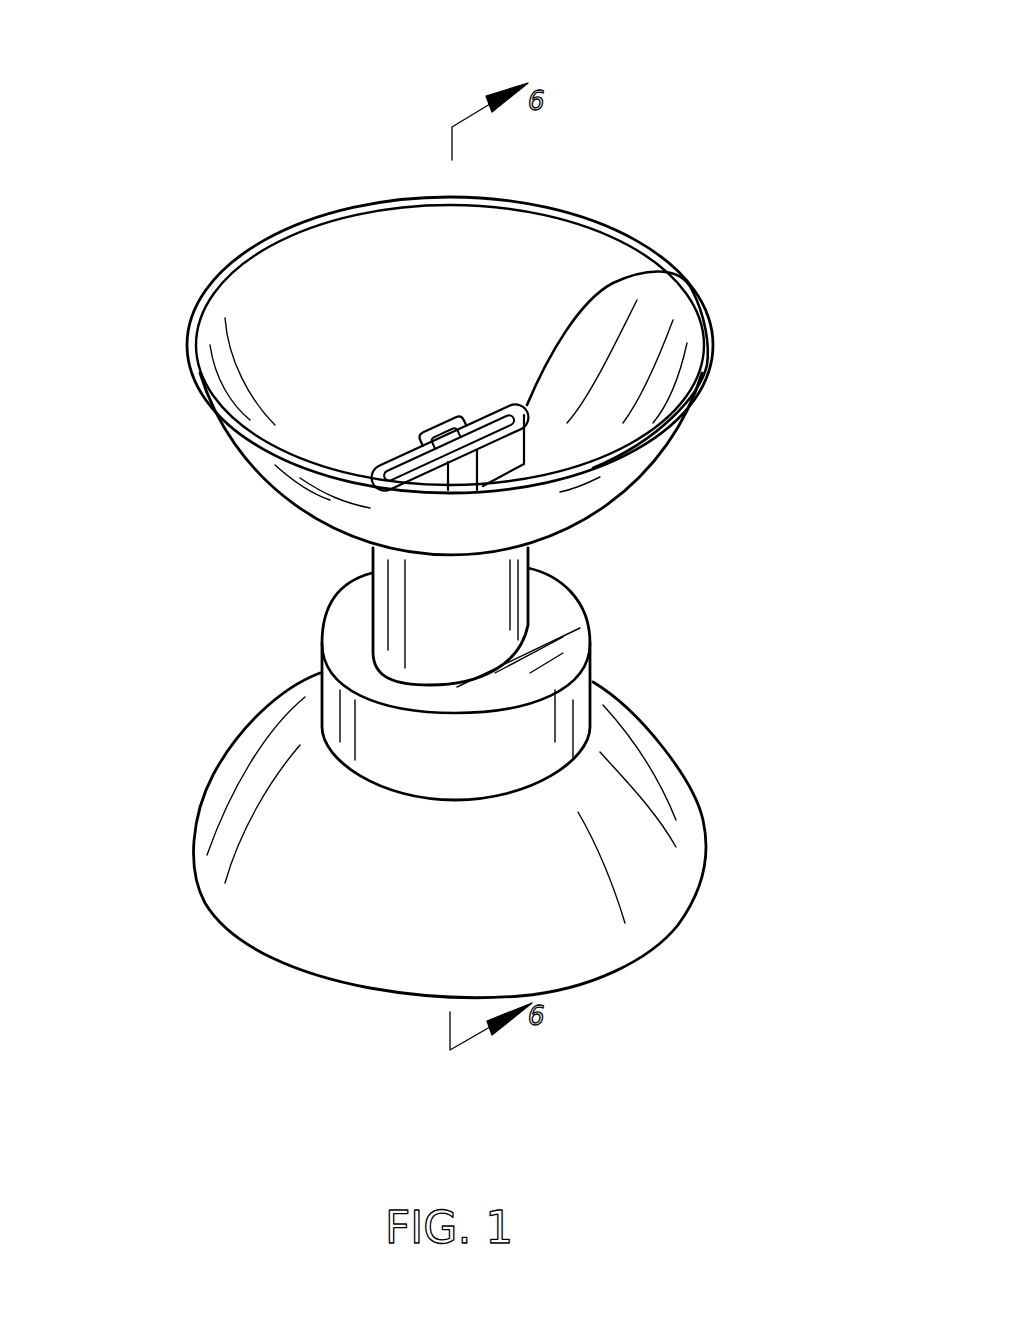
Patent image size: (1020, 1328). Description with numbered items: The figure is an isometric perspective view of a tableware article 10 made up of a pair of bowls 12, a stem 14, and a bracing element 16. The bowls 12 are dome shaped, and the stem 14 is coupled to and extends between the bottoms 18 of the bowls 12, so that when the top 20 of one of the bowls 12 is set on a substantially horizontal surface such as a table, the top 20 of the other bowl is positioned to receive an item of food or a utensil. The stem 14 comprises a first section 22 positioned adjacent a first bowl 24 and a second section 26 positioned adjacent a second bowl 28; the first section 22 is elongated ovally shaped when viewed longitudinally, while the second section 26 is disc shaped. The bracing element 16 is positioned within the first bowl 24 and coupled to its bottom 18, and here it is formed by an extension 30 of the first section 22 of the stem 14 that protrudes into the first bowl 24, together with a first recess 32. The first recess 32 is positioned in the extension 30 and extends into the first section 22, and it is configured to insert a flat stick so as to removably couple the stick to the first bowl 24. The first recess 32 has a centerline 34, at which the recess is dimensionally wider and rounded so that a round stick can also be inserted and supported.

The tableware article 10 is at (740, 127).
The bowls 12 is at (265, 713).
The stem 14 is at (455, 688).
The bracing element 16 is at (667, 270).
The bottoms 18 is at (457, 557).
The top 20 is at (400, 200).
The first section 22 is at (433, 638).
The first bowl 24 is at (193, 375).
The second section 26 is at (513, 742).
The second bowl 28 is at (231, 928).
The extension 30 is at (503, 453).
The first recess 32 is at (497, 407).
The centerline 34 is at (443, 450).